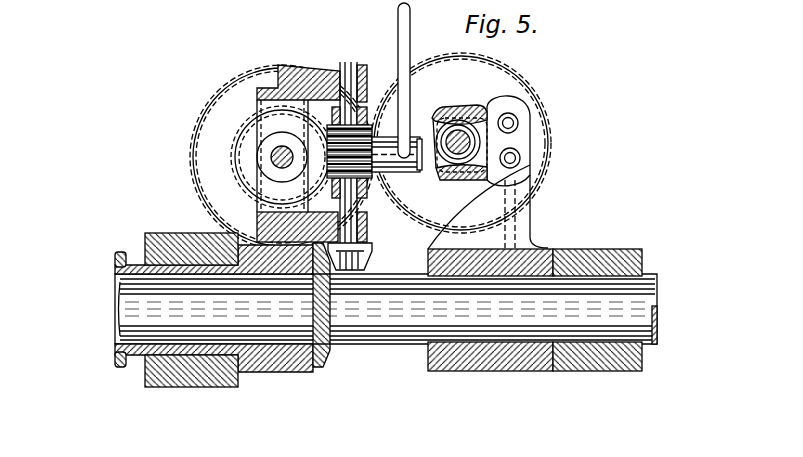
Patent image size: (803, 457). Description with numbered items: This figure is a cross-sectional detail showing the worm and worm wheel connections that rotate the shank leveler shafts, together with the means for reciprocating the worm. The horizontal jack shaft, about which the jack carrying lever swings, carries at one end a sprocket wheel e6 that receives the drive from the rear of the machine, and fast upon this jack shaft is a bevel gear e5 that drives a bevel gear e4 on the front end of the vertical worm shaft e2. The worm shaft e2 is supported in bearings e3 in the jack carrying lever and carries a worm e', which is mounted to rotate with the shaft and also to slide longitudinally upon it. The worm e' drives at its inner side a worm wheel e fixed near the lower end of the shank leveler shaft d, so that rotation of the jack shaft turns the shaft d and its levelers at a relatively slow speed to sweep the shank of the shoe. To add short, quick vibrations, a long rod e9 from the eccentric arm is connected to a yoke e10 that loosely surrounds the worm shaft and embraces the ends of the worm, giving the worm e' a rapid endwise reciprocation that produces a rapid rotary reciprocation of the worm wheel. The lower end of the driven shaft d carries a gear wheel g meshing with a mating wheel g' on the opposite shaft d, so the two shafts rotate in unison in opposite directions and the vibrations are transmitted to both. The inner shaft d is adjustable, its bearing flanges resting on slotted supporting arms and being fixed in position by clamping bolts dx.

The shank leveler shaft d is at (270, 156).
The gear wheel g is at (259, 157).
The worm wheel e is at (231, 158).
The yoke e10 is at (283, 168).
The bearings e3 is at (389, 238).
The worm shaft e2 is at (345, 65).
The long rod e9 is at (410, 28).
The worm e' is at (374, 164).
The bolts dx is at (518, 152).
The mating wheel g' is at (484, 151).
The sprocket wheel e6 is at (116, 257).
The bevel gear e4 is at (372, 263).
The bevel gear e5 is at (330, 356).